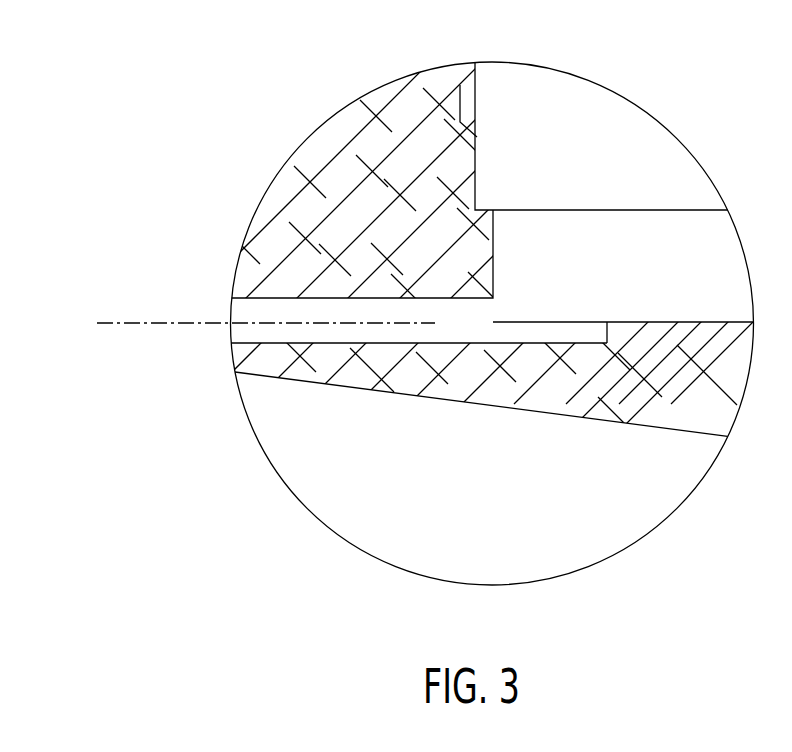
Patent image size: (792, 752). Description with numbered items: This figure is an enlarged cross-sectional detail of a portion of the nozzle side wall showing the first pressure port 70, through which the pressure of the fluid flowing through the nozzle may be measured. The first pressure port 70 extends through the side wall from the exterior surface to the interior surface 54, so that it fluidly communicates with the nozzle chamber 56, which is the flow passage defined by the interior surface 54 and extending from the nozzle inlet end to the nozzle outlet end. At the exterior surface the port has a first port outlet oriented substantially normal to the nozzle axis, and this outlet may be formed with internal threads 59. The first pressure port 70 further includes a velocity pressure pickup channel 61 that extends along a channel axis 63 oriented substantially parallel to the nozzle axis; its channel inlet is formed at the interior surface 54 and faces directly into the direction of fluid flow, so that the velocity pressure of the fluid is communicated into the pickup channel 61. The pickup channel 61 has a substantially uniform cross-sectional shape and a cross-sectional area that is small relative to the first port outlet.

The first pressure port 70 is at (684, 175).
The internal threads 59 is at (470, 105).
The channel axis 63 is at (178, 323).
The velocity pressure pickup channel 61 is at (379, 345).
The interior surface 54 is at (575, 417).
The nozzle chamber 56 is at (481, 516).